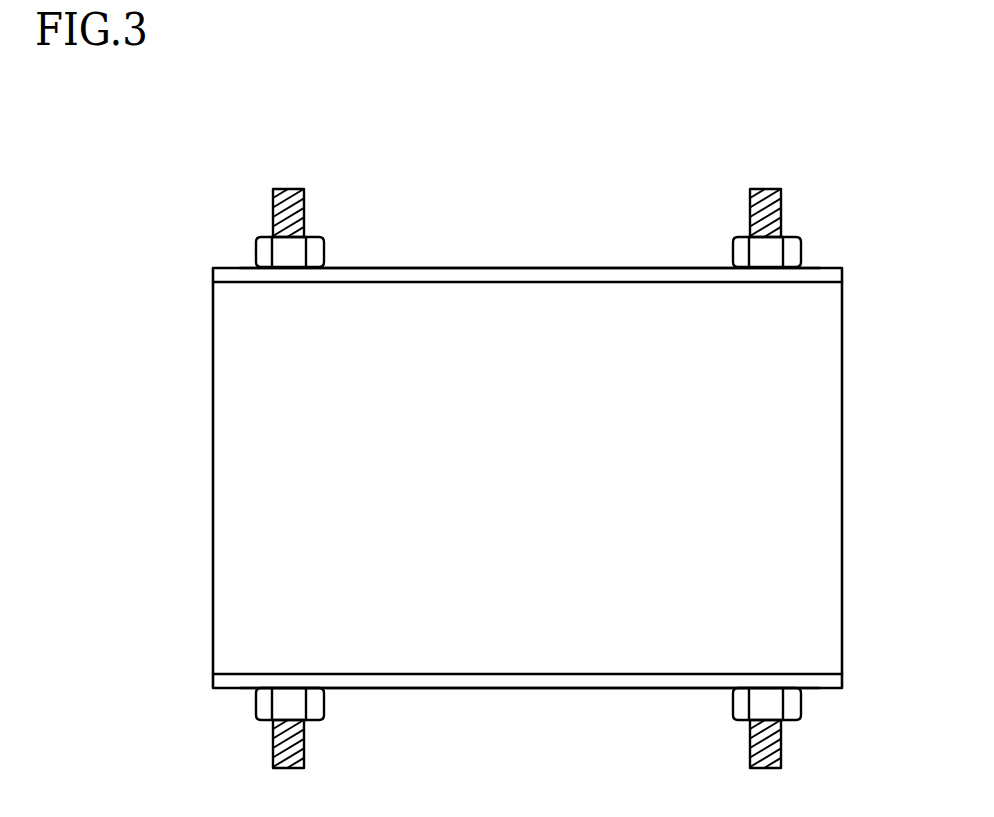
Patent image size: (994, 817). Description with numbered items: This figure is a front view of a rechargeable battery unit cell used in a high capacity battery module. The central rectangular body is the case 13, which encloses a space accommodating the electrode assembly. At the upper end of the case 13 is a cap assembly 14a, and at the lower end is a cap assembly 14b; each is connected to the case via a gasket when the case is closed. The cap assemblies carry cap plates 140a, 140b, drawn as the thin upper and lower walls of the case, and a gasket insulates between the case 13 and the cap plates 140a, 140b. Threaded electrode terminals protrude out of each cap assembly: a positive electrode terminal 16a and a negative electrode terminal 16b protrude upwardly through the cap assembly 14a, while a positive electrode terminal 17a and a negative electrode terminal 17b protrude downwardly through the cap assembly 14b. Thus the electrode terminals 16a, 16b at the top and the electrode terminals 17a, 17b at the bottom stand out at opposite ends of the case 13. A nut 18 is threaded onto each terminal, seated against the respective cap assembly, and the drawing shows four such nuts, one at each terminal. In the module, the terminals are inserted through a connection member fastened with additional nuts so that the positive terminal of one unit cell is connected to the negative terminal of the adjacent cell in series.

The case 13 is at (825, 482).
The cap assembly 14a is at (402, 250).
The cap assembly 14b is at (441, 708).
The cap plate 140a is at (497, 268).
The cap plate 140b is at (571, 688).
The positive electrode terminal 16a is at (284, 199).
The negative electrode terminal 16b is at (761, 199).
The positive electrode terminal 17a is at (297, 750).
The negative electrode terminal 17b is at (774, 750).
The nut 18 is at (259, 254).